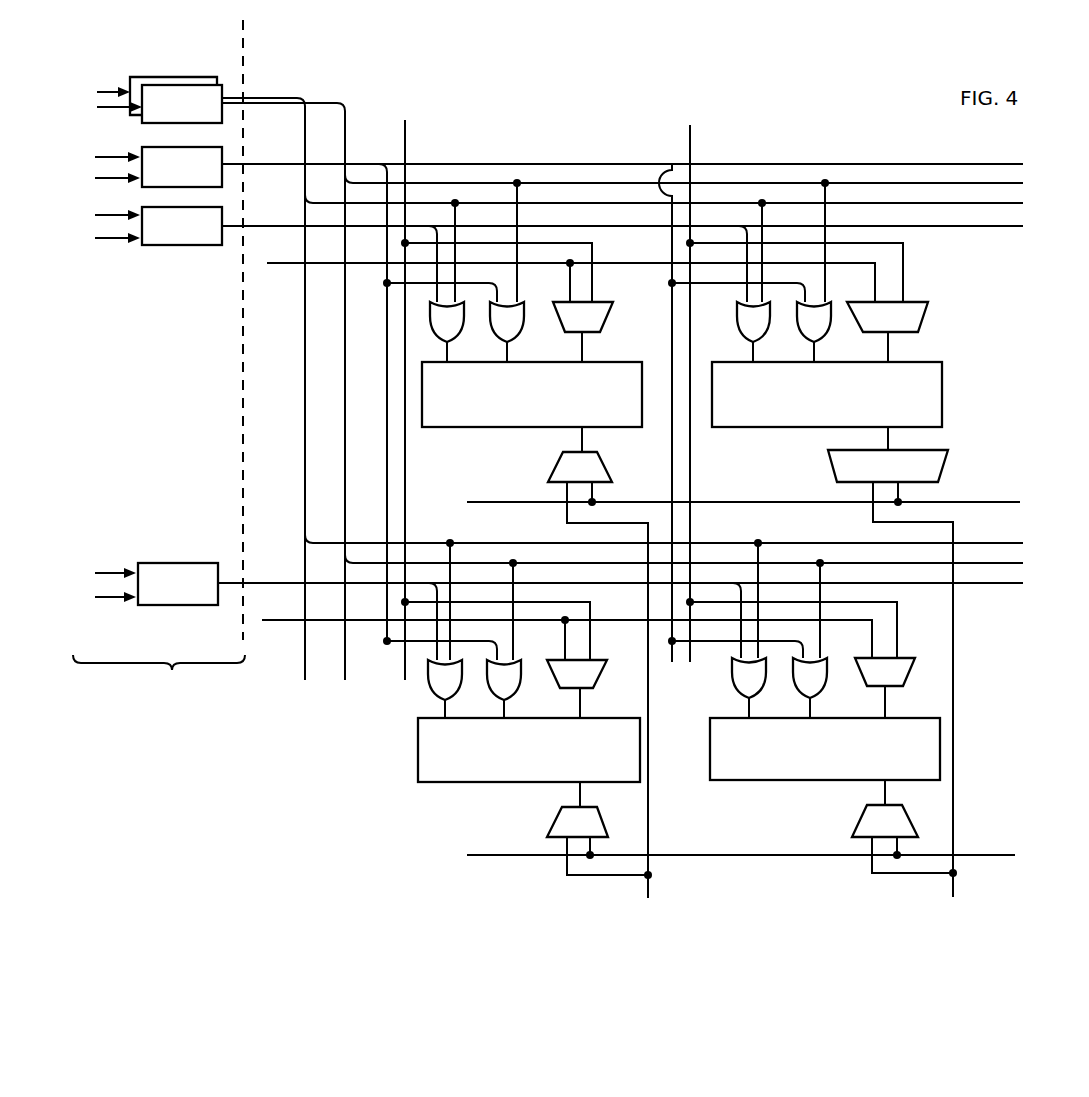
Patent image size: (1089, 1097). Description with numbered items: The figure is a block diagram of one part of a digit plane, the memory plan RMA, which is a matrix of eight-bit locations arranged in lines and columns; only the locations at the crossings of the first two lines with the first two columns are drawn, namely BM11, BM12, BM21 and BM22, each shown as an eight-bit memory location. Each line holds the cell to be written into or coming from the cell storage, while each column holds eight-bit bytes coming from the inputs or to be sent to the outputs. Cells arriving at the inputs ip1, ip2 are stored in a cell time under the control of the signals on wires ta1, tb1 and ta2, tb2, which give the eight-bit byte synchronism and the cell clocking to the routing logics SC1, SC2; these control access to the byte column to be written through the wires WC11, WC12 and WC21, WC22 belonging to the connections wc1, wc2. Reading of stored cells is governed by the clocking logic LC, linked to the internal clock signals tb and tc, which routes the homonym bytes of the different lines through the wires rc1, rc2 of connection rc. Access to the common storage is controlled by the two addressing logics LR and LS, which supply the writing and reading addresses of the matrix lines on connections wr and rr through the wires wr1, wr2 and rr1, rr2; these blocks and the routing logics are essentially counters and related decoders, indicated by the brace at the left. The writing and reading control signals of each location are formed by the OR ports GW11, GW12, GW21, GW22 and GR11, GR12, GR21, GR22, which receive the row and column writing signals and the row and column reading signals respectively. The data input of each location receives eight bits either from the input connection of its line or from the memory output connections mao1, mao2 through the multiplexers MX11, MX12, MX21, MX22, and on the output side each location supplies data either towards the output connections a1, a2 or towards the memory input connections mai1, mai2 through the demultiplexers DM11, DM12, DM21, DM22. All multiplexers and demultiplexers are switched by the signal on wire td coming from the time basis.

The addressing logic LS is at (216, 77).
The addressing logic LR is at (226, 95).
The clocking logic LC is at (210, 148).
The routing logic SC1 is at (222, 212).
The routing logic SC2 is at (196, 554).
The clock signal wire tb is at (97, 92).
The clock signal wire tc is at (95, 178).
The 8-bit byte synchronism wire ta1 is at (95, 215).
The cell clocking wire tb1 is at (103, 250).
The 8-bit byte synchronism wire ta2 is at (100, 573).
The cell clocking wire tb2 is at (95, 597).
The memory plan RMA is at (230, 845).
The writing address connection wr is at (293, 92).
The reading address connection rr is at (343, 98).
The column reading connection rc is at (258, 165).
The column reading wire rc1 is at (387, 198).
The column reading wire rc2 is at (666, 166).
The memory output connection mao1 is at (405, 128).
The memory output connection mao2 is at (690, 136).
The row reading wire rr1 is at (462, 168).
The row writing wire wr1 is at (460, 200).
The column writing connection wc1 is at (262, 227).
The input connection ip1 is at (283, 266).
The column writing wire WC11 is at (440, 280).
The column writing wire WC12 is at (737, 322).
The row writing wire wr2 is at (360, 543).
The row reading wire rr2 is at (356, 564).
The column writing connection wc2 is at (242, 583).
The input connection ip2 is at (283, 622).
The column writing wire WC21 is at (433, 634).
The column writing wire WC22 is at (740, 650).
The output connection a1 is at (998, 504).
The output connection a2 is at (982, 855).
The memory input connection mai1 is at (650, 890).
The memory input connection mai2 is at (955, 890).
The OR port GW11 is at (460, 330).
The OR port GR11 is at (540, 340).
The multiplexer MX11 is at (602, 332).
The 8-bit location BM11 is at (500, 428).
The demultiplexer DM11 is at (594, 453).
The OR port GW12 is at (768, 328).
The OR port GR12 is at (829, 327).
The multiplexer MX12 is at (918, 332).
The 8-bit location BM12 is at (760, 428).
The demultiplexer DM12 is at (946, 456).
The OR port GW21 is at (458, 688).
The OR port GR21 is at (519, 688).
The multiplexer MX21 is at (595, 688).
The 8-bit location BM21 is at (487, 796).
The demultiplexer DM21 is at (556, 820).
The OR port GW22 is at (738, 692).
The OR port GR22 is at (825, 684).
The multiplexer MX22 is at (902, 688).
The 8-bit location BM22 is at (772, 781).
The demultiplexer DM22 is at (864, 820).
The control signal wire td is at (608, 316).